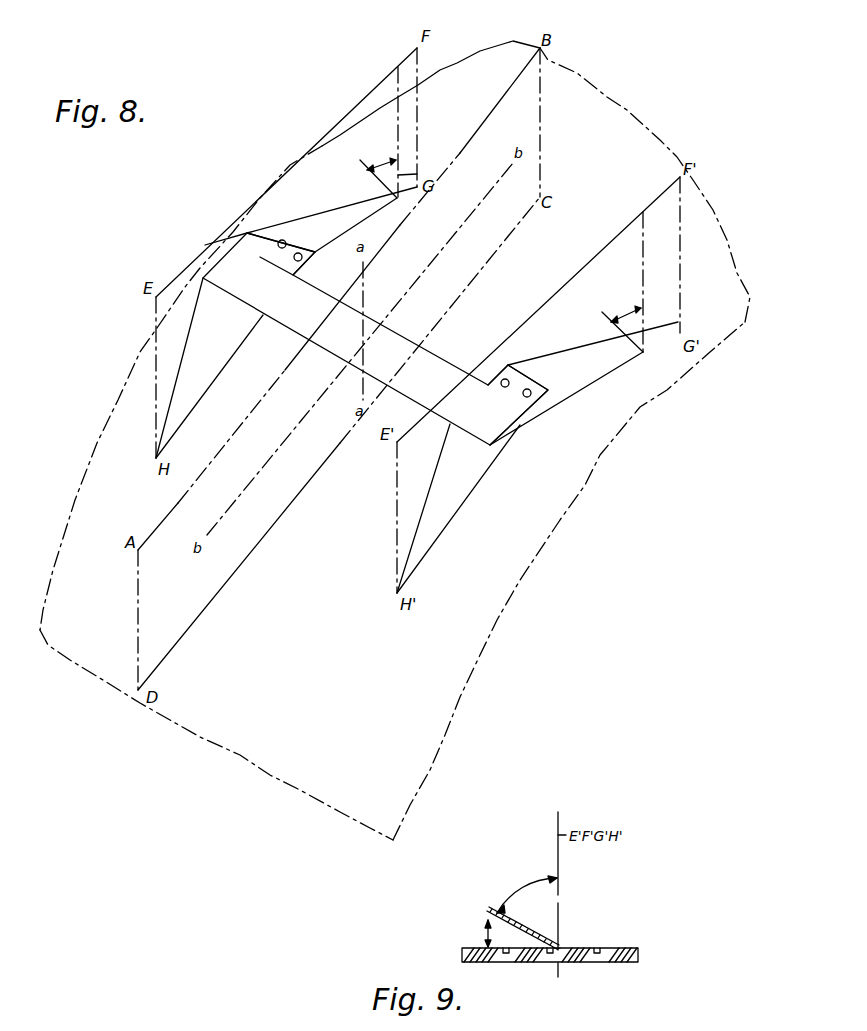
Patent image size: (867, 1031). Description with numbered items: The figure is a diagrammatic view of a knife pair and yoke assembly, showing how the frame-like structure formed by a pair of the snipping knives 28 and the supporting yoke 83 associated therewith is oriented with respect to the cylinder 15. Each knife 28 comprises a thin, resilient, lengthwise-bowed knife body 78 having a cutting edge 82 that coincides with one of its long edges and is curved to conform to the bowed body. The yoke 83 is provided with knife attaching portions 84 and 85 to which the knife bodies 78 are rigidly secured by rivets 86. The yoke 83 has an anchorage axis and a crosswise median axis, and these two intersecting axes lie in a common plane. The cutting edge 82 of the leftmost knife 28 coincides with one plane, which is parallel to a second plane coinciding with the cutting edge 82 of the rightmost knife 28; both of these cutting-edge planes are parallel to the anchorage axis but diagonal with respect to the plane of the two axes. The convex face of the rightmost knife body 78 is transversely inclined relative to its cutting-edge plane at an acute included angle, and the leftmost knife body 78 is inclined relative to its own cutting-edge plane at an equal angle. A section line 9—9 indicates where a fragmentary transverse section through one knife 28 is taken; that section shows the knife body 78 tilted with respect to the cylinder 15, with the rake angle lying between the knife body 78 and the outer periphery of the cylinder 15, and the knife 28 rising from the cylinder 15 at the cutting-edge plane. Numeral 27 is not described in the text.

In FIG. 8, the cylinder 15 is at (462, 697).
In FIG. 9, the cylinder 15 is at (630, 947).
In FIG. 9, the slots 27 is at (595, 962).
In FIG. 8, the snipping knives 28 is at (357, 210).
In FIG. 9, the snipping knives 28 is at (485, 910).
In FIG. 9, the knife body 78 is at (497, 910).
In FIG. 8, the cutting edge 82 is at (232, 350).
In FIG. 9, the cutting edge 82 is at (560, 948).
In FIG. 8, the supporting yoke 83 is at (400, 342).
In FIG. 8, the knife attaching portion 84 is at (270, 253).
In FIG. 8, the knife attaching portion 85 is at (513, 415).
In FIG. 8, the rivets 86 is at (299, 253).
In FIG. 8, the section line 9— 9 is at (558, 320).